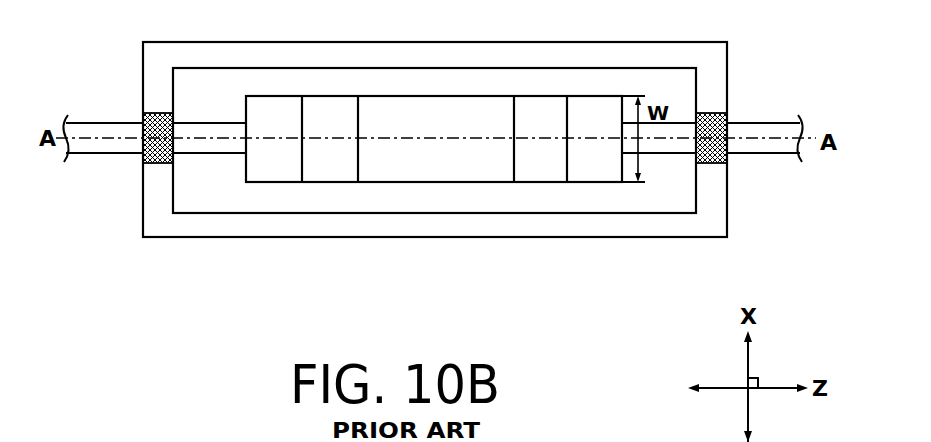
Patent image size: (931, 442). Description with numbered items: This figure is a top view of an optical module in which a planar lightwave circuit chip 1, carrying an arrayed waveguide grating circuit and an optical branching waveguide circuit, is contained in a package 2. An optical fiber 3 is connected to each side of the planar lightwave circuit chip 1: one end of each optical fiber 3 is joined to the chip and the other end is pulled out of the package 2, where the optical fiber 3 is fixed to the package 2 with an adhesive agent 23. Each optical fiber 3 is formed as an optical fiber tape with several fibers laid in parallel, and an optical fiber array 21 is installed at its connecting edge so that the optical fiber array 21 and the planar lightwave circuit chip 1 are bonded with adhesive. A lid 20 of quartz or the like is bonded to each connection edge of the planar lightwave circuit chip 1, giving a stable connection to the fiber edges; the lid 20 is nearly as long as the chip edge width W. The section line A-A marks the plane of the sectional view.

The planar lightwave circuit chip 1 is at (433, 160).
The package 2 is at (682, 227).
The optical fiber 3 is at (97, 147).
The lid 20 is at (335, 158).
The optical fiber array 21 is at (268, 158).
The adhesive agent 23 is at (141, 113).